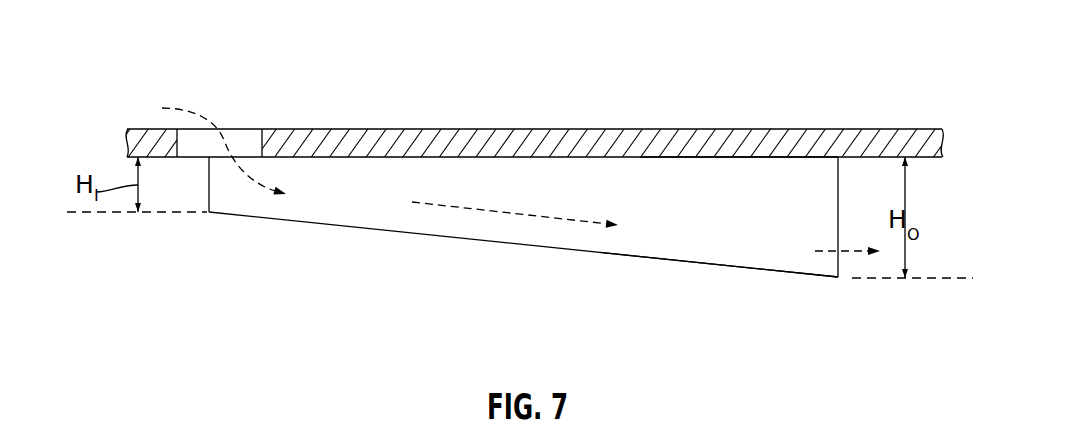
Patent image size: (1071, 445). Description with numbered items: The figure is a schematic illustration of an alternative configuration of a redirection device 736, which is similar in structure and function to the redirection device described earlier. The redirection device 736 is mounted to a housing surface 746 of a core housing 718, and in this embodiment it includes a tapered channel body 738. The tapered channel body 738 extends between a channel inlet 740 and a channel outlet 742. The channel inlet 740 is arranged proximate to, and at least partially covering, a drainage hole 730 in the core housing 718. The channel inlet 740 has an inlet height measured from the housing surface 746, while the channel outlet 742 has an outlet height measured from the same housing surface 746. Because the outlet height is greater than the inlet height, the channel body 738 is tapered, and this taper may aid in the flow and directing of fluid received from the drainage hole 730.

The core housing 718 is at (512, 130).
The drainage hole 730 is at (241, 128).
The redirection device 736 is at (455, 238).
The tapered channel body 738 is at (657, 248).
The channel inlet 740 is at (207, 188).
The channel outlet 742 is at (839, 187).
The housing surface 746 is at (715, 158).